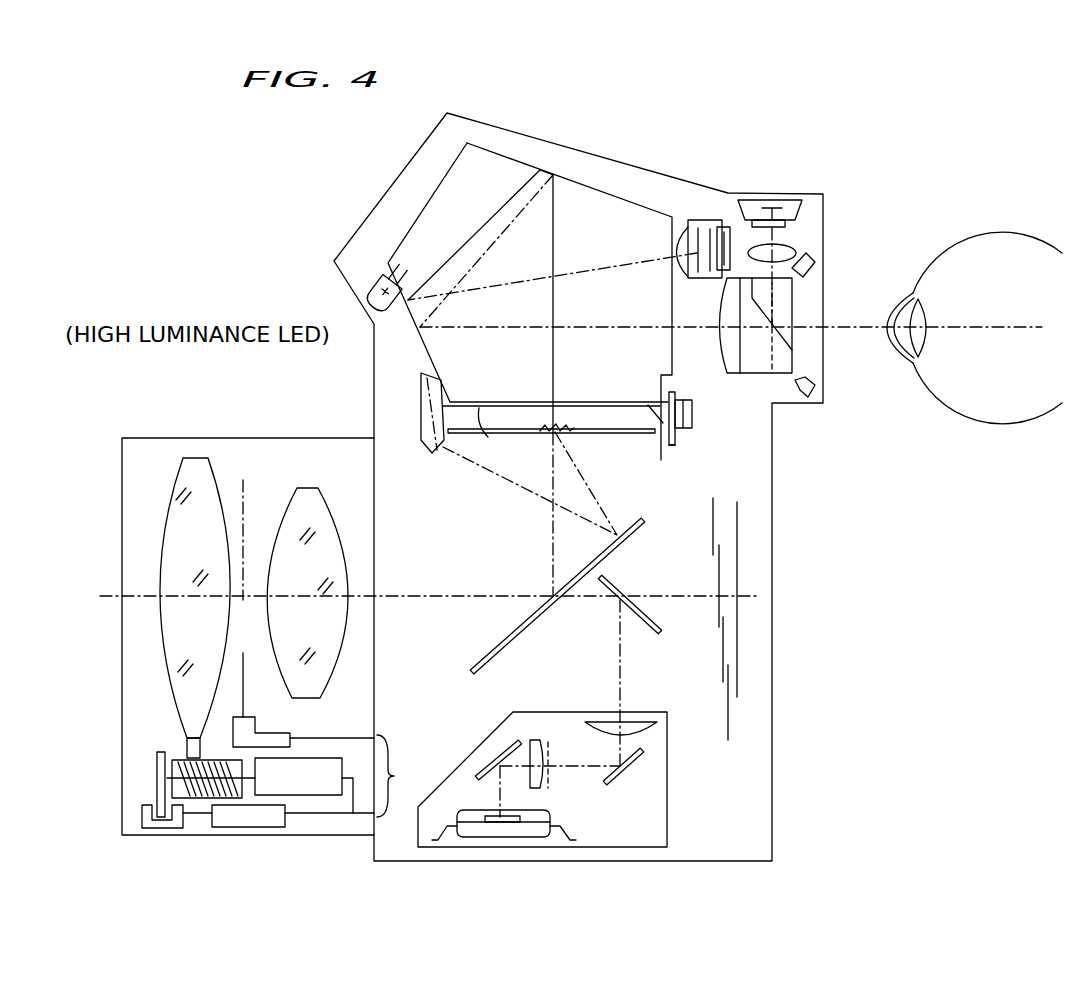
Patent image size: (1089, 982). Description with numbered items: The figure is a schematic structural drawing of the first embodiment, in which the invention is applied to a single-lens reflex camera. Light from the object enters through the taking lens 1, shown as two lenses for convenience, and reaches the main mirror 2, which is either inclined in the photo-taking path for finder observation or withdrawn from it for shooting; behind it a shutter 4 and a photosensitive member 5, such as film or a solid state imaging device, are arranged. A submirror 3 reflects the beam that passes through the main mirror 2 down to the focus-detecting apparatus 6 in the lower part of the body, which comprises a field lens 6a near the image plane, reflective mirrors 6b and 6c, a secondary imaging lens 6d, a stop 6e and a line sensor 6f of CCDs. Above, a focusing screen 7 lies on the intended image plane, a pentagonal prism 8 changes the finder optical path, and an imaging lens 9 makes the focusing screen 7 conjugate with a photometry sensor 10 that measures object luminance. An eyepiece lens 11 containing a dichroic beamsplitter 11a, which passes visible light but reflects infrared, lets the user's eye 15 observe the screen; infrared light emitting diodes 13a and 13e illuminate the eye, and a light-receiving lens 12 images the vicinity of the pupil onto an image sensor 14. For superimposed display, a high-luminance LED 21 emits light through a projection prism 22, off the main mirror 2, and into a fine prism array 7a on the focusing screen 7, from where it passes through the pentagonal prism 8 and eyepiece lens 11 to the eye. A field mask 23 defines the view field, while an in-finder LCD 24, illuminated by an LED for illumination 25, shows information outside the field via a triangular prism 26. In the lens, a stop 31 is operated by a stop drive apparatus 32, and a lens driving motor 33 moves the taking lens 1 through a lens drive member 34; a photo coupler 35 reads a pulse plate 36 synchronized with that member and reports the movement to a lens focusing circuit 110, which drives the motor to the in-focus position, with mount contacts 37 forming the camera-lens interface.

The taking lens 1 is at (178, 455).
The main mirror 2 is at (527, 633).
The submirror 3 is at (660, 640).
The shutter 4 is at (728, 722).
The photosensitive member 5 is at (737, 655).
The focus-detecting apparatus 6 is at (668, 822).
The field lens 6a is at (657, 728).
The reflective mirror 6b is at (620, 772).
The reflective mirror 6c is at (468, 758).
The secondary imaging lens 6d is at (533, 740).
The stop 6e is at (548, 742).
The line sensor 6f is at (523, 818).
The focusing screen 7 is at (630, 433).
The fine prism array 7a is at (572, 433).
The pentagonal prism 8 is at (423, 223).
The imaging lens 9 is at (690, 220).
The photometry sensor 10 is at (727, 227).
The eyepiece lens 11 is at (718, 347).
The beamsplitter 11a is at (773, 347).
The light-receiving lens 12 is at (796, 253).
The infrared light emitting diode 13a is at (825, 405).
The infrared light emitting diode 13e is at (815, 254).
The image sensor 14 is at (797, 200).
The user's eye 15 is at (1023, 246).
The high-luminance LED 21 is at (372, 290).
The projection prism 22 is at (420, 392).
The field mask 23 is at (488, 437).
The in-finder LCD 24 is at (675, 442).
The LED for illumination 25 is at (692, 415).
The triangular prism 26 is at (669, 447).
The stop 31 is at (245, 693).
The stop drive apparatus 32 is at (290, 732).
The lens driving motor 33 is at (317, 787).
The lens drive member 34 is at (182, 763).
The photo coupler 35 is at (163, 830).
The pulse plate 36 is at (157, 787).
The mount contacts 37 is at (400, 776).
The lens focusing circuit 110 is at (255, 830).